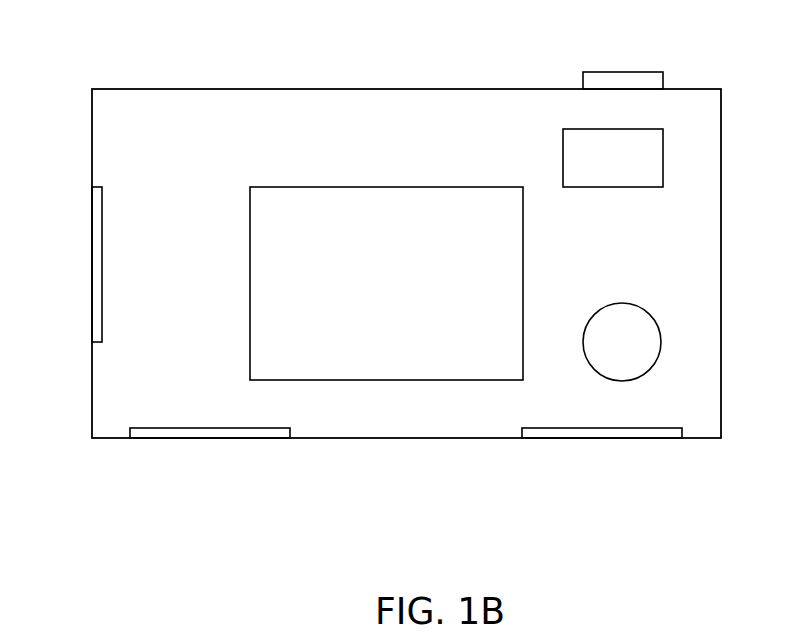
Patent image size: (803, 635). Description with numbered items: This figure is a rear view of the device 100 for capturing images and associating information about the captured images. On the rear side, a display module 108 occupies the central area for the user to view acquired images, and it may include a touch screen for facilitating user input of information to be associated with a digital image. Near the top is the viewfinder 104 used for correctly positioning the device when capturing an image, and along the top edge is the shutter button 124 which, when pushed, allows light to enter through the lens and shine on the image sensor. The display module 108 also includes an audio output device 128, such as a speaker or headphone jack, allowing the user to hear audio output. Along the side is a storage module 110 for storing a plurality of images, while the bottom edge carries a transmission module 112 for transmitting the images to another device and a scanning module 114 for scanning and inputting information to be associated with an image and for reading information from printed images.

The device 100 is at (331, 84).
The viewfinder 104 is at (572, 187).
The display module 108 is at (292, 186).
The storage module 110 is at (92, 243).
The transmission module 112 is at (148, 438).
The scanning module 114 is at (562, 438).
The shutter button 124 is at (663, 82).
The audio output device 128 is at (620, 303).